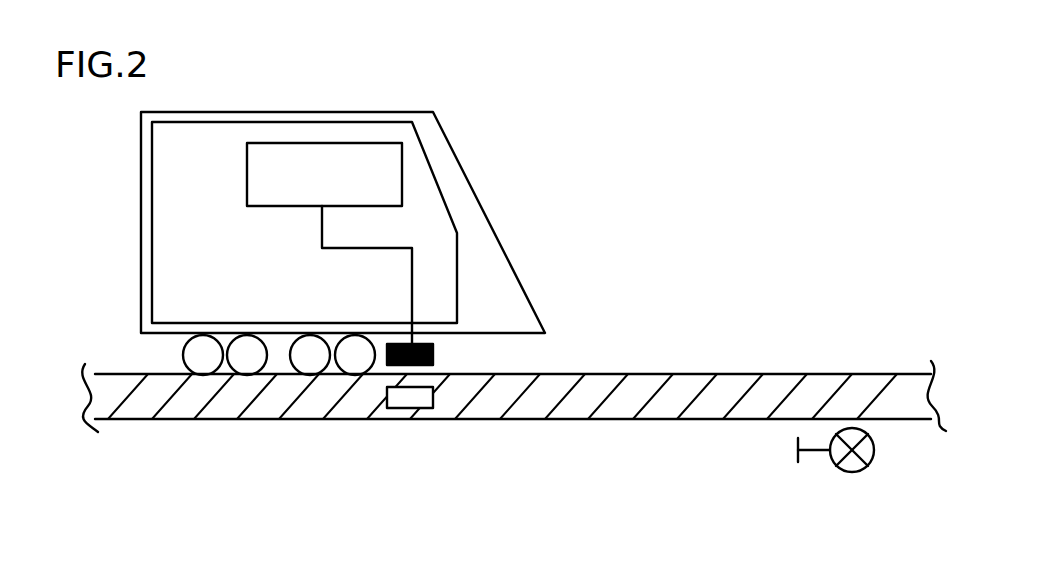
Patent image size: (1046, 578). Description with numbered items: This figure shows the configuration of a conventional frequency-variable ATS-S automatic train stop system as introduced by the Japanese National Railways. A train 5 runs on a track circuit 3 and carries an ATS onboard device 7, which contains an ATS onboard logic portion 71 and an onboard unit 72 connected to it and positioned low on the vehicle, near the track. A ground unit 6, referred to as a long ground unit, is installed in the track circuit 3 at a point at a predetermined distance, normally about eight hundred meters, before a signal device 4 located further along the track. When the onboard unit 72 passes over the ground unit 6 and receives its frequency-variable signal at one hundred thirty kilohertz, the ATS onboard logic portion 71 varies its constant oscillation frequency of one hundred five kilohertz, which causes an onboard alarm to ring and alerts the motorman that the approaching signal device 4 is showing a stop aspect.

The track circuit 3 is at (648, 374).
The signal device 4 is at (852, 472).
The train 5 is at (141, 203).
The ground unit 6 is at (412, 408).
The ATS onboard device 7 is at (457, 305).
The ATS onboard logic portion 71 is at (247, 171).
The onboard unit 72 is at (433, 355).